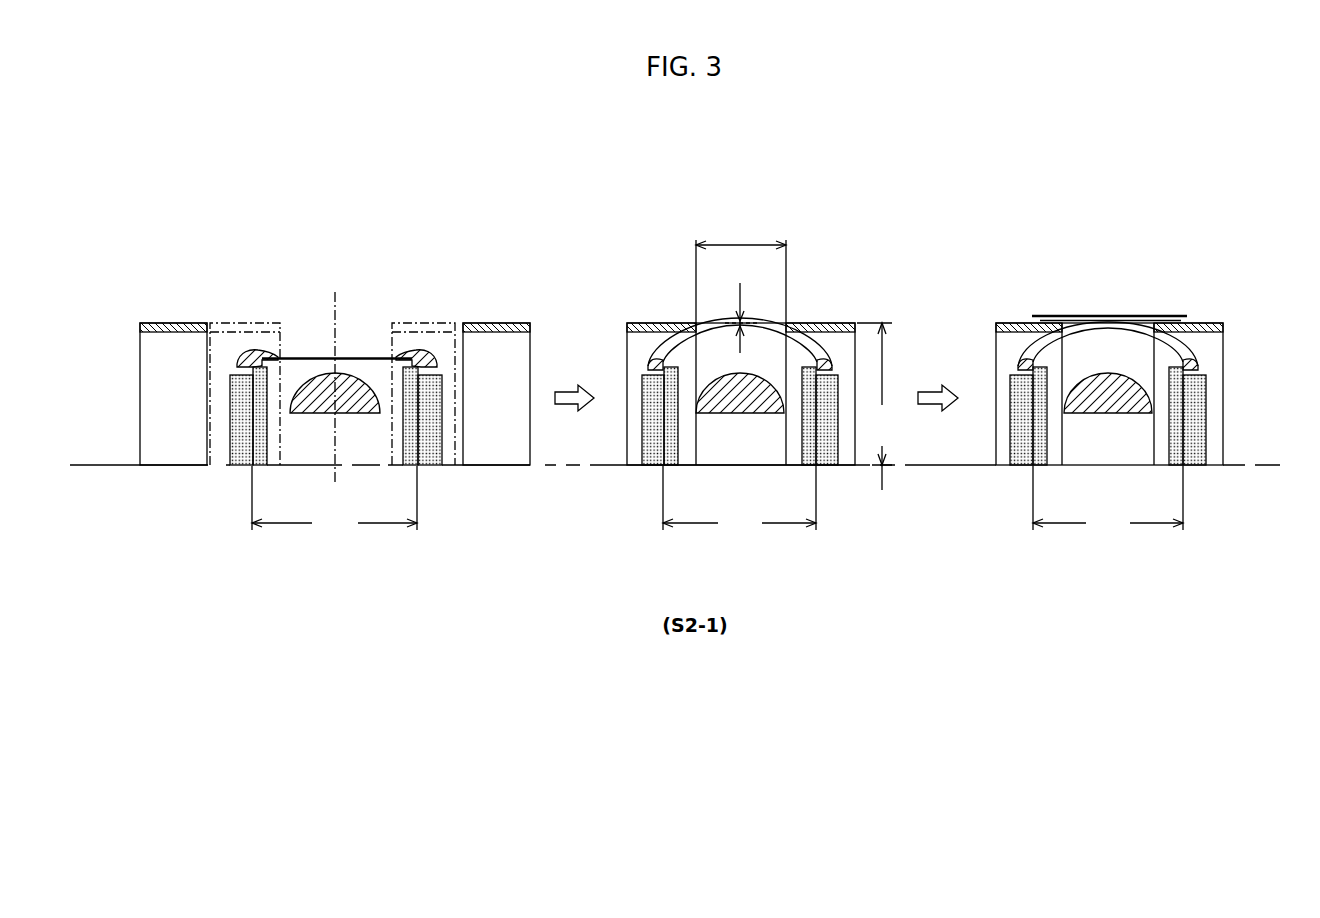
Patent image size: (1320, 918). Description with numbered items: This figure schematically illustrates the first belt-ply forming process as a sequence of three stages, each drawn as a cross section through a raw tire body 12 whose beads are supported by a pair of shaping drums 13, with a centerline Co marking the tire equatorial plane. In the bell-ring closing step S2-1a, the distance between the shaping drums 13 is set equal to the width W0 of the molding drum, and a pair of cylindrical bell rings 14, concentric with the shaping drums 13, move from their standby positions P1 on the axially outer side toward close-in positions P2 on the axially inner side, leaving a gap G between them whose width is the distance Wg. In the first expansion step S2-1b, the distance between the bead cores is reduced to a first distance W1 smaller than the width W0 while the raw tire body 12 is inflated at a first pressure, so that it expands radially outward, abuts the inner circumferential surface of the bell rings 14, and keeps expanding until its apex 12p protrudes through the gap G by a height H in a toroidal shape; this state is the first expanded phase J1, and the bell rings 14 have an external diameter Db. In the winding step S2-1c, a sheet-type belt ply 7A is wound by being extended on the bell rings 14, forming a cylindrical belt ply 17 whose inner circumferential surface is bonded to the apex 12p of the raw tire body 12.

The raw tire body 12 is at (308, 356).
The apex of raw tire body 12p is at (739, 318).
The shaping drum 13 is at (242, 422).
The bell ring 14 is at (175, 323).
The sheet-type belt ply 7A is at (1138, 247).
The cylindrical belt ply 17 is at (1122, 315).
The standby position P1 is at (509, 274).
The close-in position P2 is at (413, 312).
The center line Co is at (338, 374).
The distance between paired bell rings Wg is at (741, 230).
The height of apex H is at (750, 315).
The gap G is at (760, 328).
The first expanded phase J1 is at (802, 306).
The external diameter of bell rings Db is at (877, 406).
The width of molding drum W0 is at (334, 500).
The first distance W1 is at (923, 500).
The bell-ring closing step S2-1a is at (371, 280).
The first expansion step S2-1b is at (672, 232).
The winding step S2-1c is at (1032, 232).